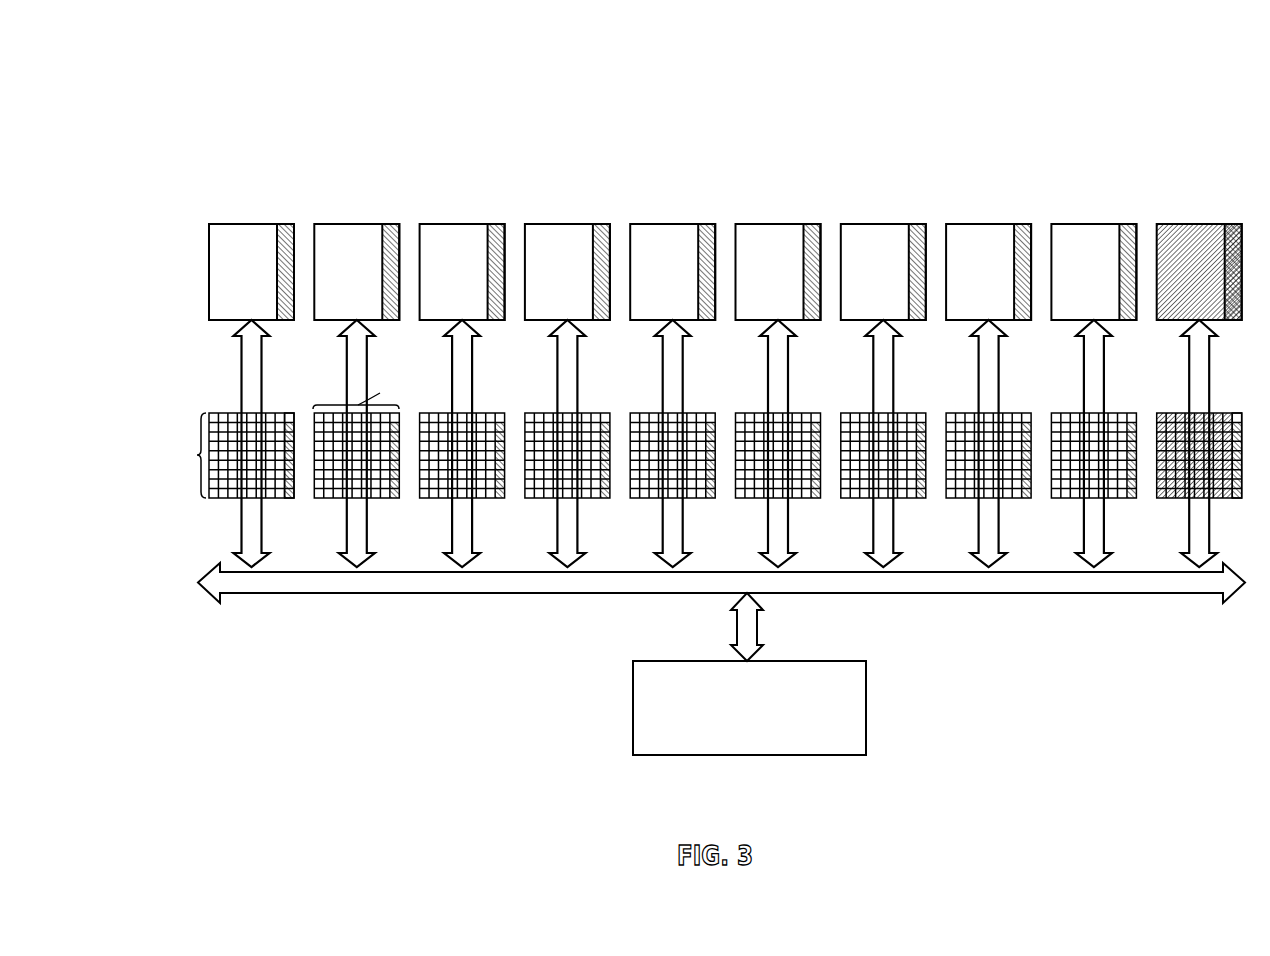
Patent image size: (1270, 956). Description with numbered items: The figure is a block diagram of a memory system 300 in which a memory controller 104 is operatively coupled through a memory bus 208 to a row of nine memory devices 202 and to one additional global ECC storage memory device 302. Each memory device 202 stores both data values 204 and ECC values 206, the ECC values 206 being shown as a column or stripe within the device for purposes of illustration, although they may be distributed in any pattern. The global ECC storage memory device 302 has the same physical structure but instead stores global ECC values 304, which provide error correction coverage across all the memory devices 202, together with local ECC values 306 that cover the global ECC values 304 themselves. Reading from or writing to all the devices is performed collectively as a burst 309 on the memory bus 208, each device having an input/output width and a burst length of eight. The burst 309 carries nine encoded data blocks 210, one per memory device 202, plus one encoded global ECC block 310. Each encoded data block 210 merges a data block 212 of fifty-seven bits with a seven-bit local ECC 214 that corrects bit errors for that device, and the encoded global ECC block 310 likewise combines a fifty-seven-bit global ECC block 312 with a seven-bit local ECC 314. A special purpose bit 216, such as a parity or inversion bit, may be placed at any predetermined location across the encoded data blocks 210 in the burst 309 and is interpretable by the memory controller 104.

The memory system 300 is at (723, 111).
The memory device 202 is at (672, 317).
The data values 204 is at (251, 244).
The ECC values 206 is at (284, 228).
The memory bus 208 is at (637, 594).
The encoded data block 210 is at (250, 451).
The data block 212 is at (272, 406).
The local ECC 214 is at (288, 505).
The special purpose bit 216 is at (1122, 413).
The global ECC storage memory device 302 is at (1202, 317).
The global ECC values 304 is at (1199, 244).
The local ECC values 306 is at (1228, 228).
The burst 309 is at (206, 506).
The encoded global ECC block 310 is at (1198, 446).
The global ECC block 312 is at (1222, 407).
The local ECC 314 is at (1238, 505).
The memory controller 104 is at (633, 756).